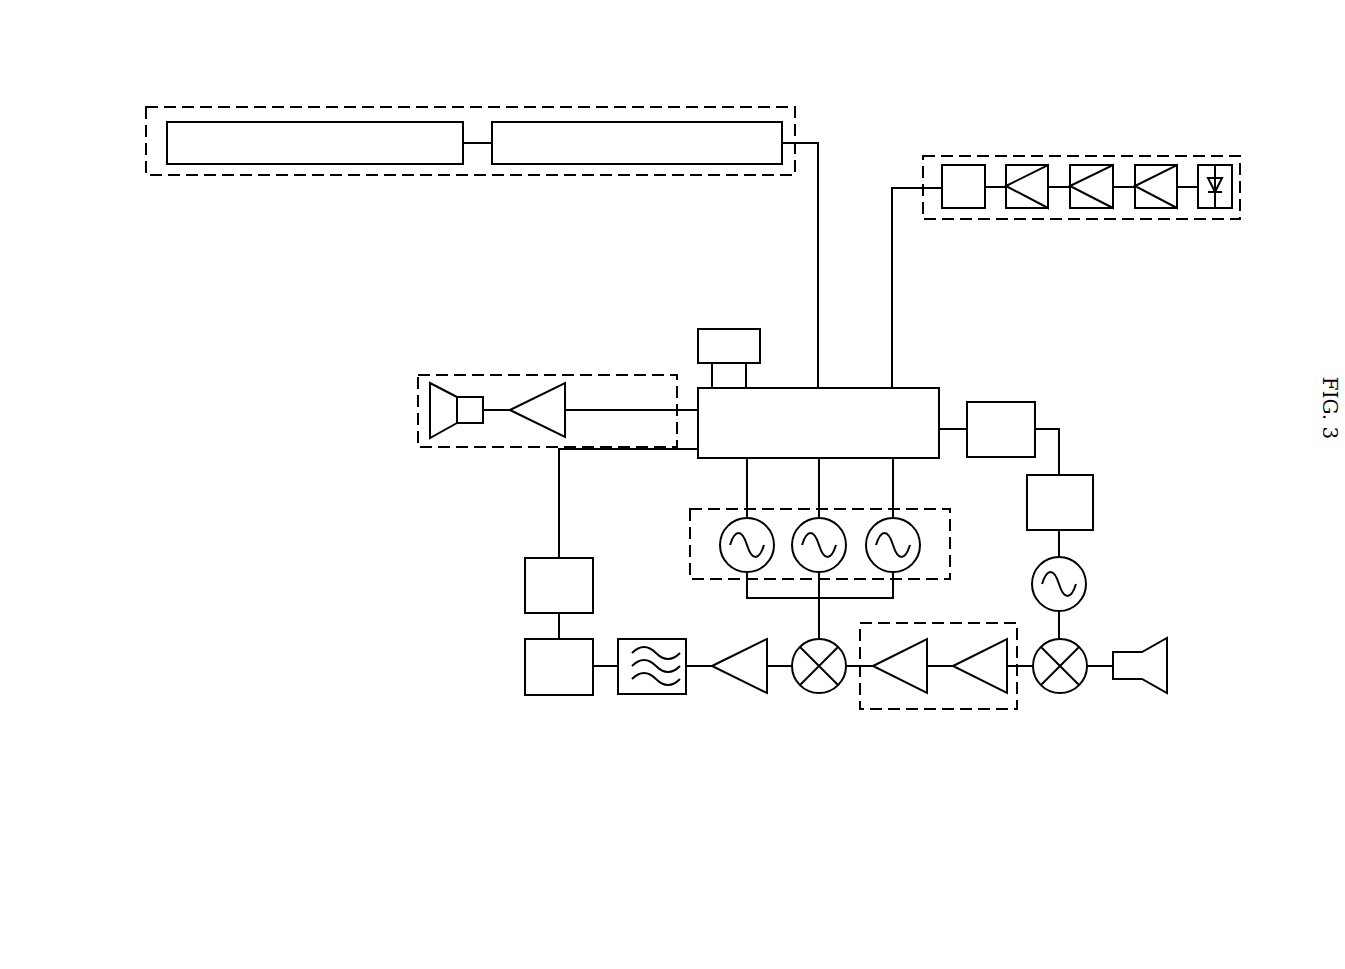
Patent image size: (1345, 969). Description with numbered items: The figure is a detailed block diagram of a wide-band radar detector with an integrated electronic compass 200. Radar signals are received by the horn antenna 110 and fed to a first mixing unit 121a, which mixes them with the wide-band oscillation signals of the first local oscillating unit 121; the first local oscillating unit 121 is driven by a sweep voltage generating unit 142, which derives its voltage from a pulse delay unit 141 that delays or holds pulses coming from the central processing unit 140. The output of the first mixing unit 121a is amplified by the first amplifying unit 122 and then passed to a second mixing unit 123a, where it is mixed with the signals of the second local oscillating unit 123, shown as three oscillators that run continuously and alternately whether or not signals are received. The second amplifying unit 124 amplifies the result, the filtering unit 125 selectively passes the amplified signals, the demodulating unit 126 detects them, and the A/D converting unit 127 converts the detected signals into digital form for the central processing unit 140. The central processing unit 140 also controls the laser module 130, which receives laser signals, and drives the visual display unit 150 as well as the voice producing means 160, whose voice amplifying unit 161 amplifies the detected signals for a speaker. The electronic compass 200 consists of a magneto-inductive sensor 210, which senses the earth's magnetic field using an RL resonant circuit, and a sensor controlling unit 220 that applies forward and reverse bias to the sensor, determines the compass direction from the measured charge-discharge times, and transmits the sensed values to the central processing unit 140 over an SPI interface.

The electronic compass 200 is at (260, 92).
The magneto-inductive sensor 210 is at (400, 122).
The sensor controlling unit 220 is at (740, 122).
The laser module 130 is at (1095, 156).
The central processing unit 140 is at (852, 400).
The visual display unit 150 is at (698, 347).
The pulse delay unit 141 is at (1020, 402).
The sweep voltage generating unit 142 is at (1093, 490).
The first local oscillating unit 121 is at (1086, 584).
The first mixing unit 121a is at (1060, 693).
The horn antenna 110 is at (1152, 680).
The first amplifying unit 122 is at (937, 710).
The second mixing unit 123a is at (818, 693).
The second amplifying unit 124 is at (742, 682).
The filtering unit 125 is at (652, 695).
The demodulating unit 126 is at (525, 667).
The A/D converting unit 127 is at (525, 585).
The second local oscillating unit 123 is at (690, 540).
The voice producing means 160 is at (462, 448).
The voice amplifying unit 161 is at (535, 425).